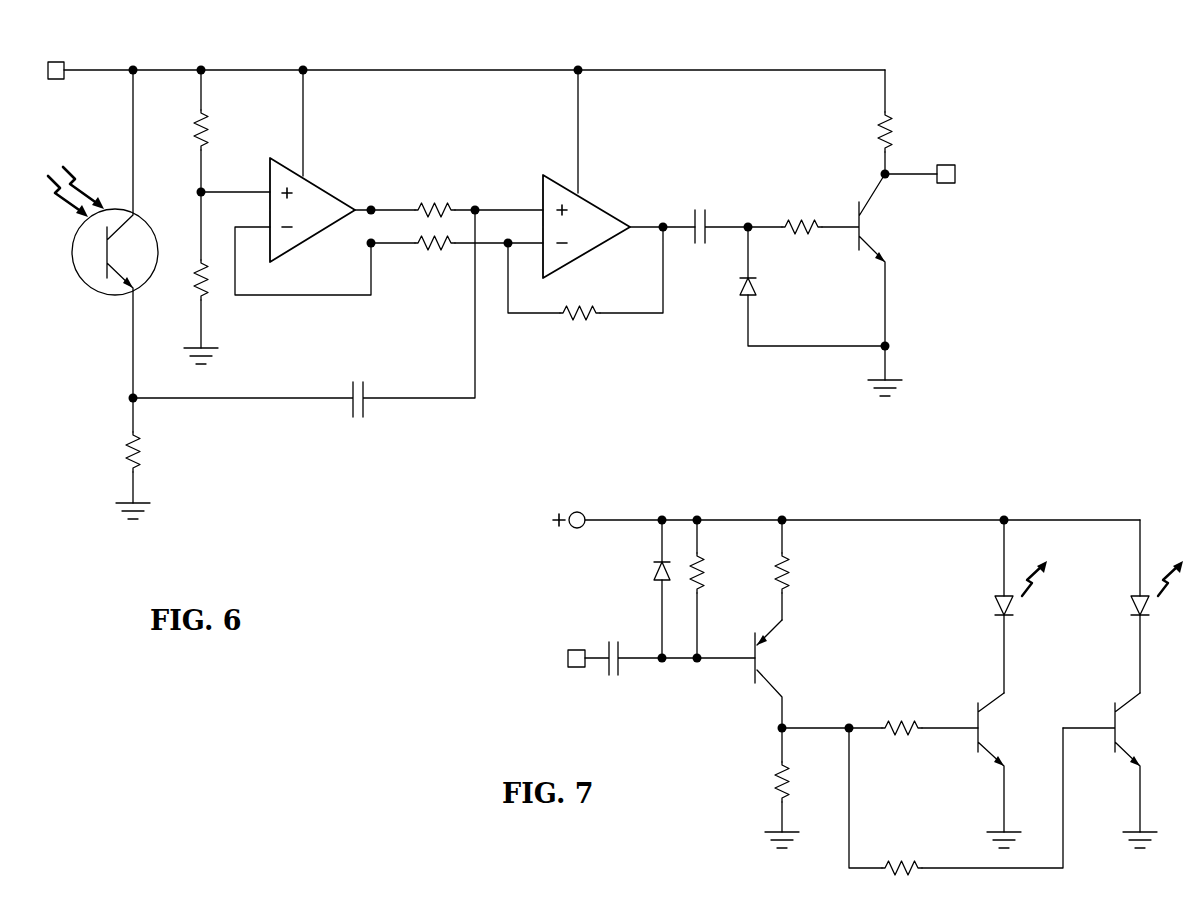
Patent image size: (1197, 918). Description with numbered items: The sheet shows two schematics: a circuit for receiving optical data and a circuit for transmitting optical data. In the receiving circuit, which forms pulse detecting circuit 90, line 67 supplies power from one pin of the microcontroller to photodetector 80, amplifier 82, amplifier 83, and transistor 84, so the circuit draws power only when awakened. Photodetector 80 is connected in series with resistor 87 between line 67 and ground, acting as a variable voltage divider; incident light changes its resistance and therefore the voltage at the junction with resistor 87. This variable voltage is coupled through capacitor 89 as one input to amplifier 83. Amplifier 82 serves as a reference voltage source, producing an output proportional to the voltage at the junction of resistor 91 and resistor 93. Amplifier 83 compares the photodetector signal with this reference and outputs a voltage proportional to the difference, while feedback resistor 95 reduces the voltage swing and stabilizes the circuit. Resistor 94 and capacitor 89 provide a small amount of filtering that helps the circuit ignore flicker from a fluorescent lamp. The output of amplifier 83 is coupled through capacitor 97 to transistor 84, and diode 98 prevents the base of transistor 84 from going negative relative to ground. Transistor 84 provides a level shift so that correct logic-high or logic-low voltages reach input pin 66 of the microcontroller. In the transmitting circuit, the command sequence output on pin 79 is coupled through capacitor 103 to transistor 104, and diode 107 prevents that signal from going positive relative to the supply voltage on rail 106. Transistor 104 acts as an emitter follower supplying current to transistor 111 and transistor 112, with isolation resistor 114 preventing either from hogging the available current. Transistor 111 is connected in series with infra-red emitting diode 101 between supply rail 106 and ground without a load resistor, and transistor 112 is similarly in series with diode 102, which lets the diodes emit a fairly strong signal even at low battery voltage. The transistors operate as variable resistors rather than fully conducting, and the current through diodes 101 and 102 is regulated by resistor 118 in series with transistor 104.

In FIG. 6, the input pin 66 is at (917, 167).
In FIG. 6, the line 67 is at (75, 66).
In FIG. 7, the pin 79 is at (597, 655).
In FIG. 6, the photodetector 80 is at (90, 288).
In FIG. 6, the amplifier 82 is at (313, 182).
In FIG. 6, the amplifier 83 is at (592, 195).
In FIG. 6, the transistor 84 is at (868, 227).
In FIG. 6, the resistor 87 is at (147, 450).
In FIG. 6, the capacitor 89 is at (360, 380).
In FIG. 6, the pulse detecting circuit 90 is at (930, 73).
In FIG. 6, the resistor 91 is at (212, 128).
In FIG. 6, the resistor 93 is at (185, 283).
In FIG. 6, the resistor 94 is at (433, 197).
In FIG. 6, the feedback resistor 95 is at (578, 318).
In FIG. 6, the capacitor 97 is at (703, 200).
In FIG. 6, the diode 98 is at (733, 287).
In FIG. 7, the infra-red emitting diode 101 is at (993, 607).
In FIG. 7, the infra-red emitting diode 102 is at (1130, 607).
In FIG. 7, the capacitor 103 is at (613, 682).
In FIG. 7, the transistor 104 is at (768, 658).
In FIG. 7, the supply rail 106 is at (947, 518).
In FIG. 7, the diode 107 is at (653, 568).
In FIG. 7, the transistor 111 is at (983, 730).
In FIG. 7, the transistor 112 is at (1120, 730).
In FIG. 7, the isolation resistor 114 is at (898, 722).
In FIG. 7, the resistor 118 is at (795, 570).